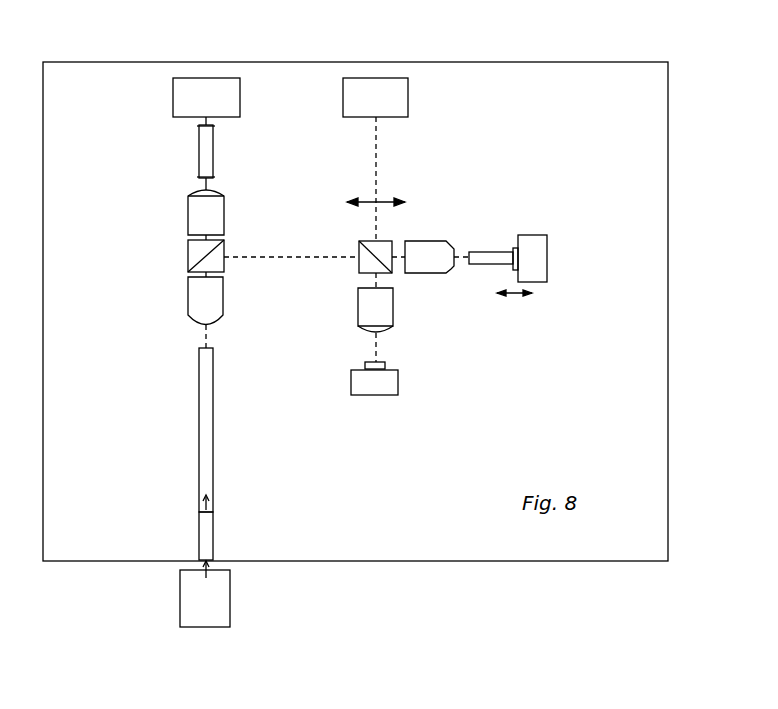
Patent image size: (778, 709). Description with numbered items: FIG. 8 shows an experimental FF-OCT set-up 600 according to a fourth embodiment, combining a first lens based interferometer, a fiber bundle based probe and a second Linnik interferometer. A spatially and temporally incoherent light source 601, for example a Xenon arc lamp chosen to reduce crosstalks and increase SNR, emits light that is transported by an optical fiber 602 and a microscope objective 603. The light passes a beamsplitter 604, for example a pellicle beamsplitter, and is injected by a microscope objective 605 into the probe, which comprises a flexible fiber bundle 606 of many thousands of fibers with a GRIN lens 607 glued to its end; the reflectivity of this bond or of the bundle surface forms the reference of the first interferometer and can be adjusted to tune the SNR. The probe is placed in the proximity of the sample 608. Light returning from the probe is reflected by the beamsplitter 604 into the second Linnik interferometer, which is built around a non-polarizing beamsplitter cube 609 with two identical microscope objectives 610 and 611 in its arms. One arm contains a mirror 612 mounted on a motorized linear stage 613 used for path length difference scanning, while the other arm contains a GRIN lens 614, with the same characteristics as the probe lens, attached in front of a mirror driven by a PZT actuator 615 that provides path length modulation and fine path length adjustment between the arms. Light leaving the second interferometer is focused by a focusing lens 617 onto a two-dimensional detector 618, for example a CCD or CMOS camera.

The FF-OCT set-up 600 is at (119, 62).
The light source 601 is at (185, 100).
The optical fiber 602 is at (205, 150).
The microscope objective 603 is at (205, 210).
The beamsplitter 604 is at (205, 253).
The microscope objective 605 is at (205, 296).
The fiber bundle 606 is at (205, 428).
The GRIN lens 607 is at (205, 532).
The sample 608 is at (205, 605).
The beamsplitter 609 is at (368, 263).
The microscope objective 610 is at (370, 312).
The microscope objective 611 is at (425, 262).
The mirror 612 is at (365, 364).
The motorized linear stage 613 is at (392, 380).
The GRIN lens 614 is at (482, 260).
The mirror with PZT actuator 615 is at (514, 250).
The focusing lens 617 is at (385, 201).
The 2D detector 618 is at (360, 98).